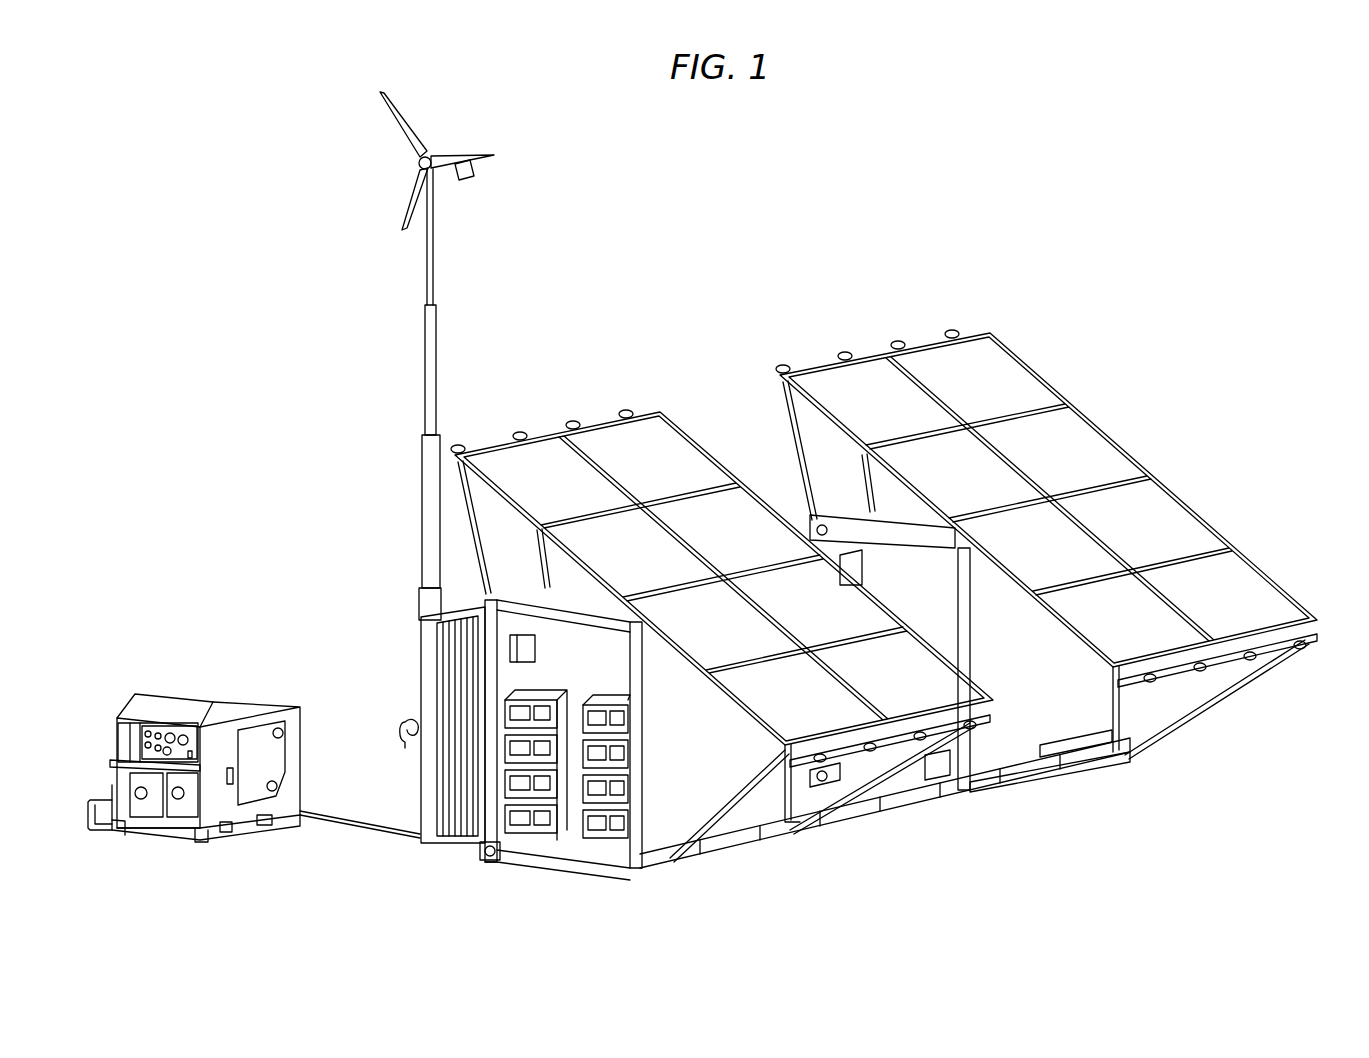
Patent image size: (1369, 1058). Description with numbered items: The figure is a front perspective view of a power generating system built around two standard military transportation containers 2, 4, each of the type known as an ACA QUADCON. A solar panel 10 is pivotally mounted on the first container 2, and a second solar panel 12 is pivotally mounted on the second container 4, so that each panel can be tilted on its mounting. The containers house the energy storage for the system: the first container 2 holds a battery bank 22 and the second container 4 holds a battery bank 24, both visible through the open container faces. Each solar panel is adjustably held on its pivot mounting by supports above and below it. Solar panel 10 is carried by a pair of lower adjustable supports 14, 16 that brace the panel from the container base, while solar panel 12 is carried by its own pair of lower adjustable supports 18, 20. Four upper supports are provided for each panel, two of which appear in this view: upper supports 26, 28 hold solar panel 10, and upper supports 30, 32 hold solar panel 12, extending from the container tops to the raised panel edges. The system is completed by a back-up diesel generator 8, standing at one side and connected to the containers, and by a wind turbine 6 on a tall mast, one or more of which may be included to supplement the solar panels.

The transportation container 2 is at (750, 815).
The transportation container 4 is at (1073, 740).
The wind turbine 6 is at (437, 350).
The back-up diesel generator 8 is at (240, 707).
The solar panel 10 is at (665, 436).
The solar panel 12 is at (995, 357).
The lower adjustable support 14 is at (850, 795).
The lower adjustable support 16 is at (700, 830).
The lower adjustable support 18 is at (1035, 750).
The lower adjustable support 20 is at (1190, 710).
The battery bank 22 is at (535, 835).
The battery bank 24 is at (935, 762).
The upper support 26 is at (472, 548).
The upper support 28 is at (540, 562).
The upper support 30 is at (800, 463).
The upper support 32 is at (866, 487).